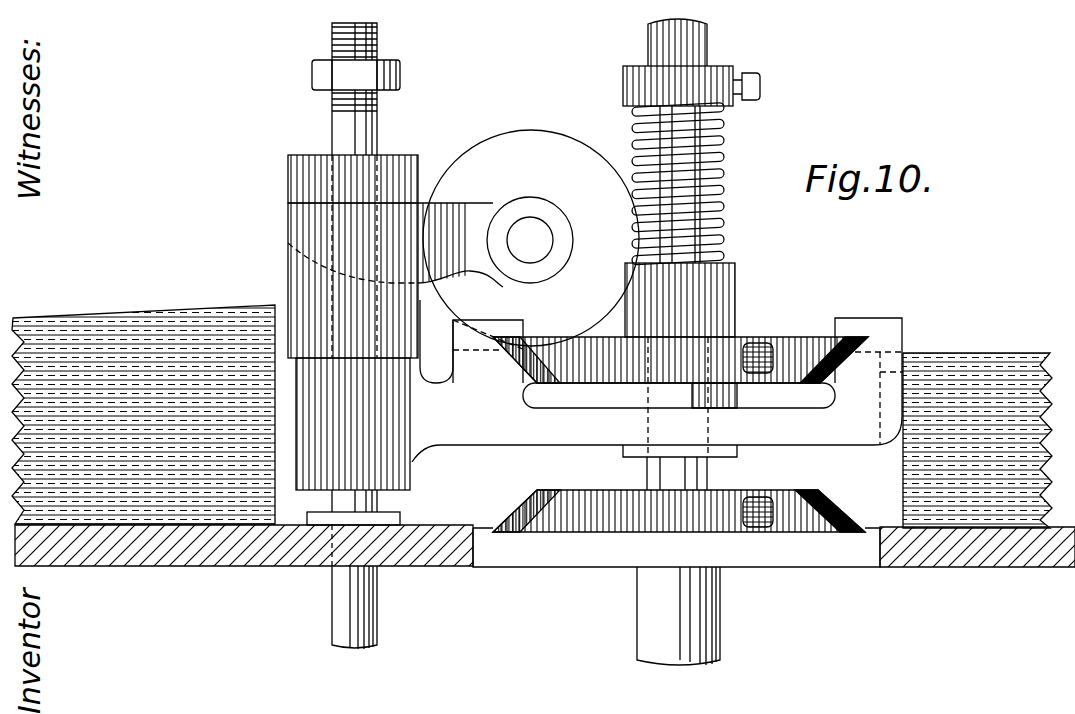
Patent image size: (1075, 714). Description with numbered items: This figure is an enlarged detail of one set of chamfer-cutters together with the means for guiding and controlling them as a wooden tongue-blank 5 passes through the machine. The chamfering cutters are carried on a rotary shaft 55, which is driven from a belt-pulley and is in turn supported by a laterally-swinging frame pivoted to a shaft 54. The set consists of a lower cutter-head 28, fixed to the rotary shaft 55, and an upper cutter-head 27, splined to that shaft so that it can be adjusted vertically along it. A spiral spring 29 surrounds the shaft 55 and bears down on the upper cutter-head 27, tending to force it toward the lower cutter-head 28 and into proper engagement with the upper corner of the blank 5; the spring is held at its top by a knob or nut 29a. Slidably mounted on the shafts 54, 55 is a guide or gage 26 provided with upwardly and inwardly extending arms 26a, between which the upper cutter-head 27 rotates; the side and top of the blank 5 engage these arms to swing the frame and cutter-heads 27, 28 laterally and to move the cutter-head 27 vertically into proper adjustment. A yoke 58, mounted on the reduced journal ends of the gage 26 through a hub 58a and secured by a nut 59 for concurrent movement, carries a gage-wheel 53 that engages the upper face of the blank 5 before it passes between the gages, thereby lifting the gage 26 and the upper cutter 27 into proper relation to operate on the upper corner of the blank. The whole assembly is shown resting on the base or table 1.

The base plate 1 is at (230, 567).
The tongue-blank 5 is at (181, 314).
The guide or gage 26 is at (657, 442).
The upwardly and inwardly extending arm 26a is at (473, 342).
The upper cutter-head 27 is at (790, 340).
The lower cutter-head 28 is at (812, 497).
The spiral spring 29 is at (725, 193).
The adjusting knob 29a is at (738, 107).
The gage-wheel 53 is at (531, 222).
The shaft 54 is at (378, 621).
The rotary shaft 55 is at (637, 643).
The yoke 58 is at (495, 290).
The hub of arm 58a is at (288, 225).
The nut 59 is at (288, 172).